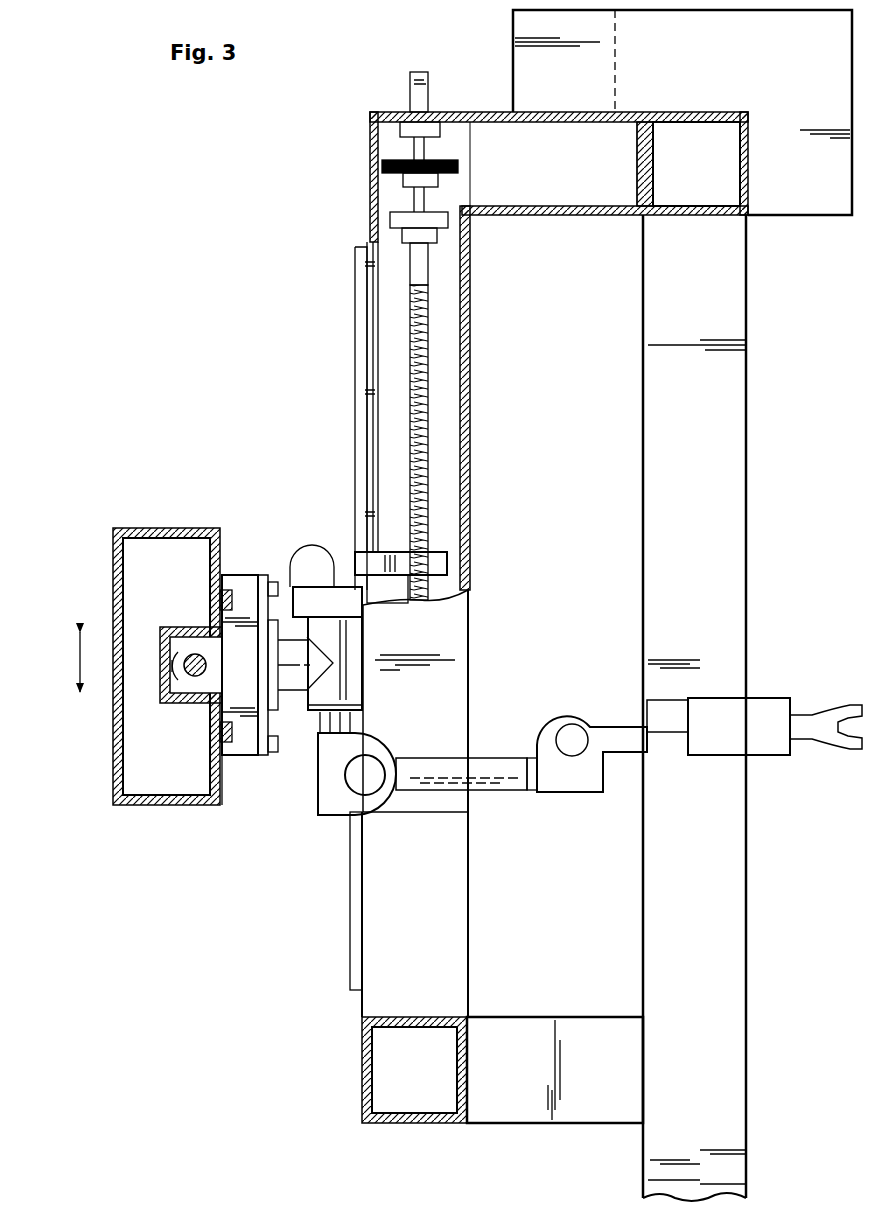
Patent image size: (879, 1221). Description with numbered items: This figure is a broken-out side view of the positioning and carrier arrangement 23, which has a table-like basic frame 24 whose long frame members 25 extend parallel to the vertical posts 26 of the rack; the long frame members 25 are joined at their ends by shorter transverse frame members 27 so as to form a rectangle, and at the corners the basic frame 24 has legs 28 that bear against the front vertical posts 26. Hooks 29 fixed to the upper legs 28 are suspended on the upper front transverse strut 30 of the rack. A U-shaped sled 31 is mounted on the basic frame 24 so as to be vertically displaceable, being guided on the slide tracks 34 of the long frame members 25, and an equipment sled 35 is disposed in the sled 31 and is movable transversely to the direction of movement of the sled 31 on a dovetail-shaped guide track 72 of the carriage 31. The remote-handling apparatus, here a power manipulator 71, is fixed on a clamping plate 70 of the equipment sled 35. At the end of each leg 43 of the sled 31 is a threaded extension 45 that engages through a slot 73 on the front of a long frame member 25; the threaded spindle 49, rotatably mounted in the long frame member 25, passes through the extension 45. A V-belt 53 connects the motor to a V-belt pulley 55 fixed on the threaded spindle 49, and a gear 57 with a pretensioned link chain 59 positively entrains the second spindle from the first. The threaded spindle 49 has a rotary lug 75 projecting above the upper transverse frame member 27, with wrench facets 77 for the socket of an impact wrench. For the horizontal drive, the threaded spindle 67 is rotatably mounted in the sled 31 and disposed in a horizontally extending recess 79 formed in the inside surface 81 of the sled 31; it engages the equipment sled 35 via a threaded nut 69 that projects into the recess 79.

The positioning and carrier arrangement 23 is at (322, 267).
The basic frame 24 is at (358, 1015).
The long frame member 25 is at (360, 955).
The vertical post 26 is at (748, 452).
The transverse frame member 27 is at (362, 1085).
The leg 28 is at (577, 217).
The hook 29 is at (812, 200).
The upper front transverse strut 30 is at (700, 212).
The sled 31 is at (145, 524).
The slide track 34 is at (358, 438).
The equipment sled 35 is at (242, 575).
The leg 43 is at (313, 548).
The extension 45 is at (450, 563).
The threaded spindle 49 is at (410, 305).
The V-belt 53 is at (440, 222).
The V-belt pulley 55 is at (392, 218).
The gear 57 is at (380, 165).
The link chain 59 is at (402, 180).
The threaded spindle 67 is at (192, 668).
The threaded nut 69 is at (175, 690).
The clamping plate 70 is at (264, 760).
The power manipulator 71 is at (516, 794).
The dovetail-shaped guide track 72 is at (226, 590).
The slot 73 is at (362, 365).
The rotary lug 75 is at (418, 105).
The wrench facets 77 is at (418, 90).
The recess 79 is at (170, 640).
The inside surface 81 is at (220, 790).